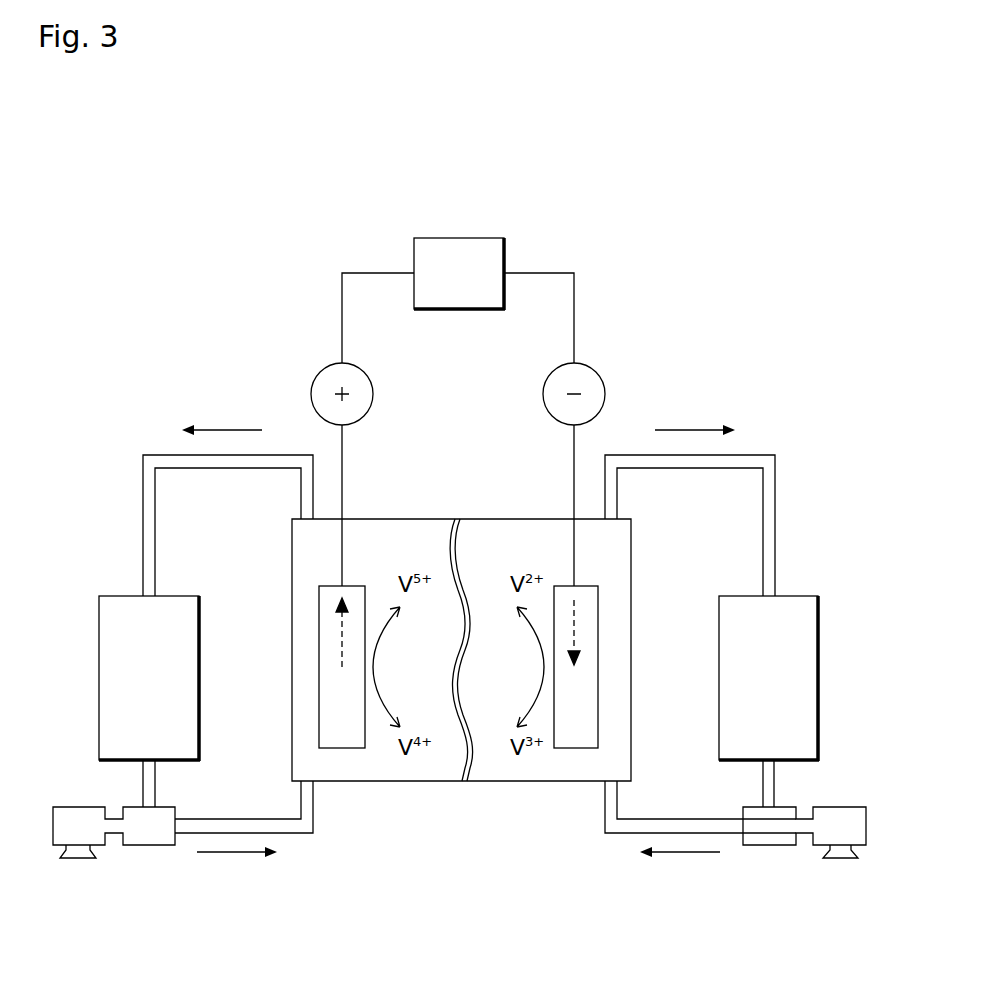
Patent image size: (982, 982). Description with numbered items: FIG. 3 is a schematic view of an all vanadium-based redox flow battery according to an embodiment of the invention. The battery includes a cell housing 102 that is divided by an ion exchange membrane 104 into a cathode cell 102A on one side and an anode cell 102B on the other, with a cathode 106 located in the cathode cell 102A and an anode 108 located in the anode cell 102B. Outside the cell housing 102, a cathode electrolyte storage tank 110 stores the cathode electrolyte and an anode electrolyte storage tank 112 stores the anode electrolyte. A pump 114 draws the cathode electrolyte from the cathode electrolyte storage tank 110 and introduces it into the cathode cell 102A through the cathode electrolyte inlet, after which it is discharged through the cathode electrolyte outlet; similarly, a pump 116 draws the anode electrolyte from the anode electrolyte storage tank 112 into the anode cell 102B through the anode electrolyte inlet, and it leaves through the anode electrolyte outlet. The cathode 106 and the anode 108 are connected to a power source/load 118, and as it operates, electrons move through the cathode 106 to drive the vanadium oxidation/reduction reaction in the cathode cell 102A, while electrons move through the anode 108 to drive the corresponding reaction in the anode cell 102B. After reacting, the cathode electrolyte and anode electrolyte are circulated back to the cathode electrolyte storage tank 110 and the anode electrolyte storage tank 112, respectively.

The cell housing 102 is at (461, 643).
The cathode cell 102A is at (377, 771).
The anode cell 102B is at (545, 771).
The ion exchange membrane 104 is at (468, 781).
The cathode 106 is at (319, 728).
The anode 108 is at (598, 728).
The cathode electrolyte storage tank 110 is at (120, 594).
The anode electrolyte storage tank 112 is at (805, 594).
The pump 114 is at (78, 858).
The pump 116 is at (848, 858).
The power source/load 118 is at (456, 236).